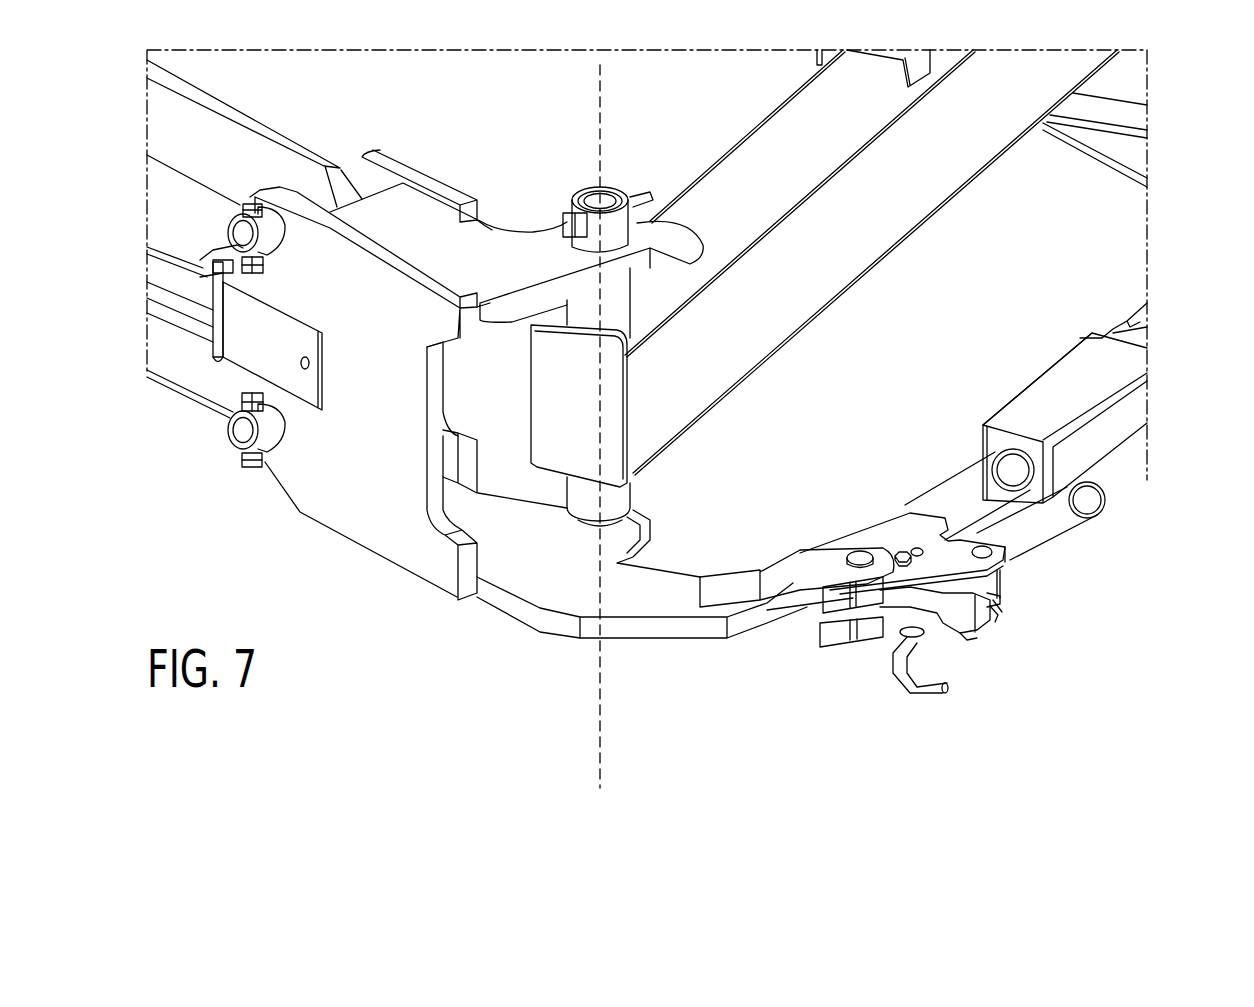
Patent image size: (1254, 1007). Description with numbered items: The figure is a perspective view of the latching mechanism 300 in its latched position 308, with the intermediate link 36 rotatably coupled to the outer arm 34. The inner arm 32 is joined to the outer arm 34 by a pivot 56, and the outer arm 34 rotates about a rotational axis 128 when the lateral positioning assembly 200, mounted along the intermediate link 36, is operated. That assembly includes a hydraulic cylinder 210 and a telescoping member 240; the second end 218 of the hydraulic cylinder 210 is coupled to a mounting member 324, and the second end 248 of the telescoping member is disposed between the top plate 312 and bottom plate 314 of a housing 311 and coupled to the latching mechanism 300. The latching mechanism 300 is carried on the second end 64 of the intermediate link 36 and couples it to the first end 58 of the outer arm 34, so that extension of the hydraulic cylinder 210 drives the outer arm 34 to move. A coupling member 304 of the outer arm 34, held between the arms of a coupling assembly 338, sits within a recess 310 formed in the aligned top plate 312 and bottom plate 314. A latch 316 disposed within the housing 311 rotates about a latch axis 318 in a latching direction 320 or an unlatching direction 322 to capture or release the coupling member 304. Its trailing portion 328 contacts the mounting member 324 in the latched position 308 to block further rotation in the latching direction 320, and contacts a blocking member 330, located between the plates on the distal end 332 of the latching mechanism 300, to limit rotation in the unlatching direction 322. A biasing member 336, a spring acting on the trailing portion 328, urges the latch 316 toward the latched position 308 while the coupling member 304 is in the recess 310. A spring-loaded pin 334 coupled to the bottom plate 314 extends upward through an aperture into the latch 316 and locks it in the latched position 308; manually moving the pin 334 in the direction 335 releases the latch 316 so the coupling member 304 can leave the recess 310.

The inner arm 32 is at (732, 147).
The outer arm 34 is at (380, 560).
The intermediate link 36 is at (1103, 310).
The pivot 56 is at (578, 197).
The first end of the outer arm 58 is at (688, 637).
The second end of the intermediate link 64 is at (923, 495).
The rotational axis 128 is at (600, 133).
The lateral positioning assembly 200 is at (1022, 370).
The hydraulic cylinder 210 is at (1133, 523).
The second end of the hydraulic cylinder 218 is at (980, 588).
The telescoping member 240 is at (967, 427).
The second end of the telescoping member 248 is at (943, 485).
The latching mechanism 300 is at (1017, 675).
The coupling member 304 is at (867, 612).
The latched position 308 is at (828, 714).
The recess 310 is at (853, 530).
The housing 311 is at (1007, 530).
The top plate 312 is at (887, 527).
The bottom plate 314 is at (1000, 600).
The latch 316 is at (1000, 607).
The latch axis 318 is at (873, 430).
The latching direction 320 is at (872, 405).
The unlatching direction 322 is at (903, 560).
The mounting member 324 is at (997, 612).
The trailing portion 328 is at (968, 637).
The blocking member 330 is at (850, 623).
The distal end of the latching mechanism 332 is at (813, 607).
The pin 334 is at (927, 703).
The direction 335 is at (904, 823).
The biasing member 336 is at (987, 640).
The coupling assembly 338 is at (813, 548).